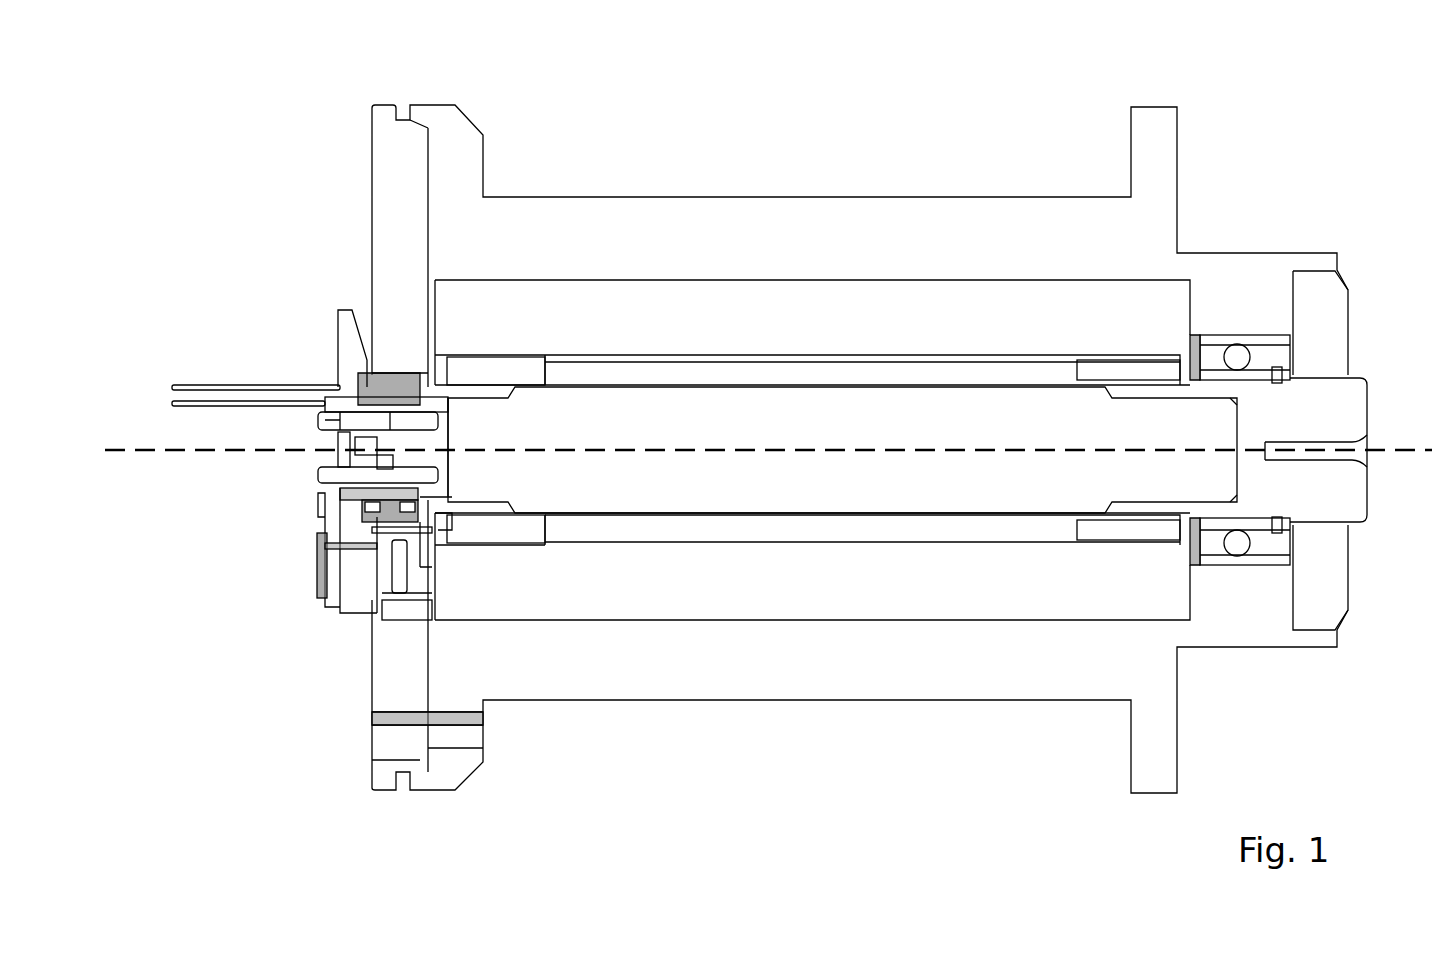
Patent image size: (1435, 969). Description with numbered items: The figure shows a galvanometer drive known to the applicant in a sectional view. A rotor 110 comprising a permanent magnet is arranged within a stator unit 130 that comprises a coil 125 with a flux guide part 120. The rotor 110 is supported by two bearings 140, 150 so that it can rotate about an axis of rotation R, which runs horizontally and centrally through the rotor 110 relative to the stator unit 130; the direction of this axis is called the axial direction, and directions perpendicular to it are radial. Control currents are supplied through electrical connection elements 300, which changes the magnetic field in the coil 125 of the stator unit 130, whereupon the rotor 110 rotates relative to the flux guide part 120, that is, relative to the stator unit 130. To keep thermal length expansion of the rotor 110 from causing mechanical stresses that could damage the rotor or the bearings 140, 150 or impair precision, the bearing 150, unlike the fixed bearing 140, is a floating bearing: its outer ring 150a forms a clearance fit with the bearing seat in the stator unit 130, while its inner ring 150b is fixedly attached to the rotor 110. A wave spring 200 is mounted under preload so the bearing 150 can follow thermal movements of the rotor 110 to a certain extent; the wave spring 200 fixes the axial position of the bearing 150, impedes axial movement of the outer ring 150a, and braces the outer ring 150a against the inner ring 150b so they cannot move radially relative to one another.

The rotor 110 is at (800, 473).
The flux guide part 120 is at (772, 307).
The coil 125 is at (662, 368).
The stator unit 130 is at (1020, 232).
The fixed bearing 140 is at (374, 378).
The floating bearing 150 is at (1242, 546).
The outer ring 150a is at (1255, 557).
The inner ring 150b is at (1263, 527).
The wave spring 200 is at (1188, 547).
The electrical connection elements 300 is at (180, 383).
The axis of rotation R is at (1408, 450).